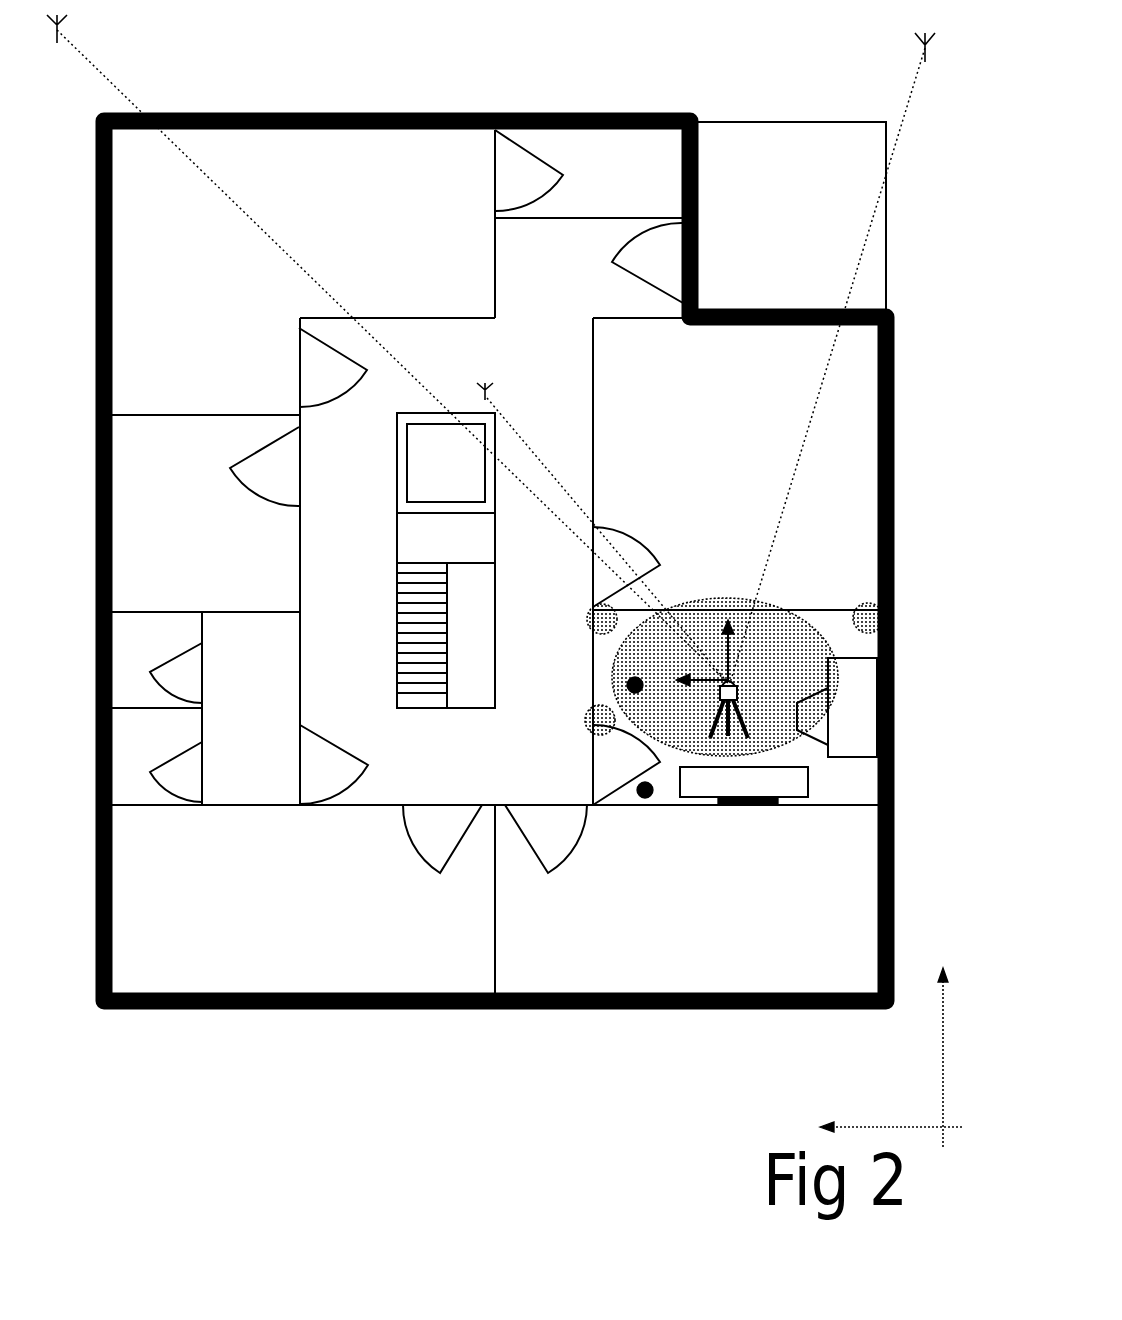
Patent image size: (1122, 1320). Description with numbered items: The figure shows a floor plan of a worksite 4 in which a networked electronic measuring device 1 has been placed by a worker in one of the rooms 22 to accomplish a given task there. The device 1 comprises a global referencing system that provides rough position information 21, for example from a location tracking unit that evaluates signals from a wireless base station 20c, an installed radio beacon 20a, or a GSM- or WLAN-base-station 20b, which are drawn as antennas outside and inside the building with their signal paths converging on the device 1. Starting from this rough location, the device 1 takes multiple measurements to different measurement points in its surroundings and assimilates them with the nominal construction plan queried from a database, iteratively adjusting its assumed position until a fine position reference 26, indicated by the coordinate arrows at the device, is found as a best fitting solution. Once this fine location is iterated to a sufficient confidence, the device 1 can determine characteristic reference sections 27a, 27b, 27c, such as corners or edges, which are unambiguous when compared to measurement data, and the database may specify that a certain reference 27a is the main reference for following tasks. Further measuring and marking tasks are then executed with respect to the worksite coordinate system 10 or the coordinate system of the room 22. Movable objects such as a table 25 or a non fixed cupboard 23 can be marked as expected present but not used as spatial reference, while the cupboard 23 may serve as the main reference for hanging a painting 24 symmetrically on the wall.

The networked electronic measuring device 1 is at (732, 680).
The worksite 4 is at (122, 1034).
The worksite coordinate system 10 is at (938, 1123).
The radio beacon 20a is at (60, 28).
The GSM- or WLAN-base-station 20b is at (917, 42).
The wireless base station 20c is at (489, 398).
The rough position information 21 is at (630, 681).
The room 22 is at (643, 798).
The cupboard 23 is at (692, 792).
The painting 24 is at (745, 806).
The movable table 25 is at (868, 700).
The fine position reference 26 is at (727, 622).
The characteristic reference section 27a is at (598, 610).
The characteristic reference section 27b is at (596, 729).
The characteristic reference section 27c is at (868, 604).